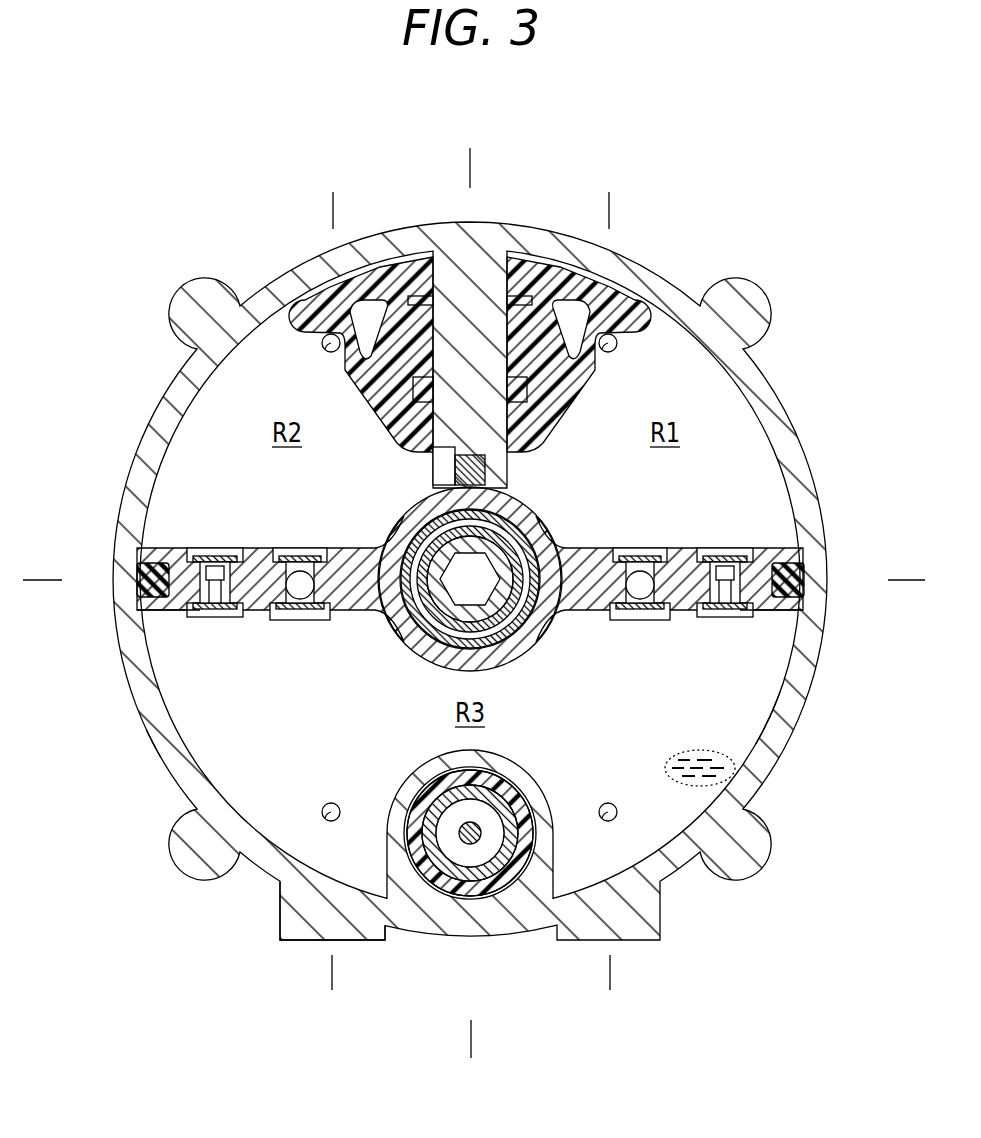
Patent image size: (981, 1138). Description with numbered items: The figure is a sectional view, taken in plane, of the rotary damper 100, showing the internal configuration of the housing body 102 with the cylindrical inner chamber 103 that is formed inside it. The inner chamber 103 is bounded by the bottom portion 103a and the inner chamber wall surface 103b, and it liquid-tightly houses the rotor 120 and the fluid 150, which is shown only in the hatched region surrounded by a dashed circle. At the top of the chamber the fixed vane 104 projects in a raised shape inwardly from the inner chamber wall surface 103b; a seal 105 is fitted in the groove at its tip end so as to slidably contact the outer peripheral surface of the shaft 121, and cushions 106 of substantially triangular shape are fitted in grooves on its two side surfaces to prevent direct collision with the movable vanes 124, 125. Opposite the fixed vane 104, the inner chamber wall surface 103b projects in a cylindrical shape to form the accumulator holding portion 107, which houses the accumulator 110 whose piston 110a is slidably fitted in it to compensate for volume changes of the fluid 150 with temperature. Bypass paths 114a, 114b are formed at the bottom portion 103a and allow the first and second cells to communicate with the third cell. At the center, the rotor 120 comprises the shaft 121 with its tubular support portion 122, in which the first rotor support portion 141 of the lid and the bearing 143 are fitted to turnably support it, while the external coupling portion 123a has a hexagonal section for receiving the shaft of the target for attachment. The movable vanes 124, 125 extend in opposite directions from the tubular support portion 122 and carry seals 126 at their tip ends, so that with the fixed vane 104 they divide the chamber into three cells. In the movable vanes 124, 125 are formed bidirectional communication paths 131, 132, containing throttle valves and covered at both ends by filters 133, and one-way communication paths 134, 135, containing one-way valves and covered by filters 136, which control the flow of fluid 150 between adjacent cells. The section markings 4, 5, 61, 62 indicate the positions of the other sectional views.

The rotary damper 100 is at (164, 165).
The housing body 102 is at (136, 438).
The inner chamber 103 is at (165, 741).
The bottom portion 103a is at (755, 693).
The inner chamber wall surface 103b is at (168, 762).
The fixed vane 104 is at (433, 470).
The seal 105 is at (487, 473).
The cushion 106 is at (345, 376).
The accumulator holding portion 107 is at (421, 863).
The accumulator 110 is at (514, 773).
The piston 110a is at (470, 842).
The bypass path 114a is at (617, 343).
The bypass path 114b is at (322, 343).
The rotor 120 is at (470, 590).
The shaft 121 is at (472, 669).
The tubular support portion 122 is at (430, 625).
The external coupling portion 123a is at (455, 565).
The movable vane 124 is at (790, 620).
The movable vane 125 is at (158, 627).
The seal 126 is at (150, 560).
The bidirectional communication path 131 is at (712, 565).
The bidirectional communication path 132 is at (192, 564).
The filter 133 is at (459, 570).
The one-way communication path 134 is at (631, 577).
The one-way communication path 135 is at (289, 577).
The filter 136 is at (459, 570).
The first rotor support portion 141 is at (506, 508).
The bearing 143 is at (492, 621).
The fluid 150 is at (722, 752).
The section line 4 is at (474, 152).
The section line 5 is at (23, 585).
The section line 6-1 61 is at (613, 192).
The section line 6-2 62 is at (337, 192).